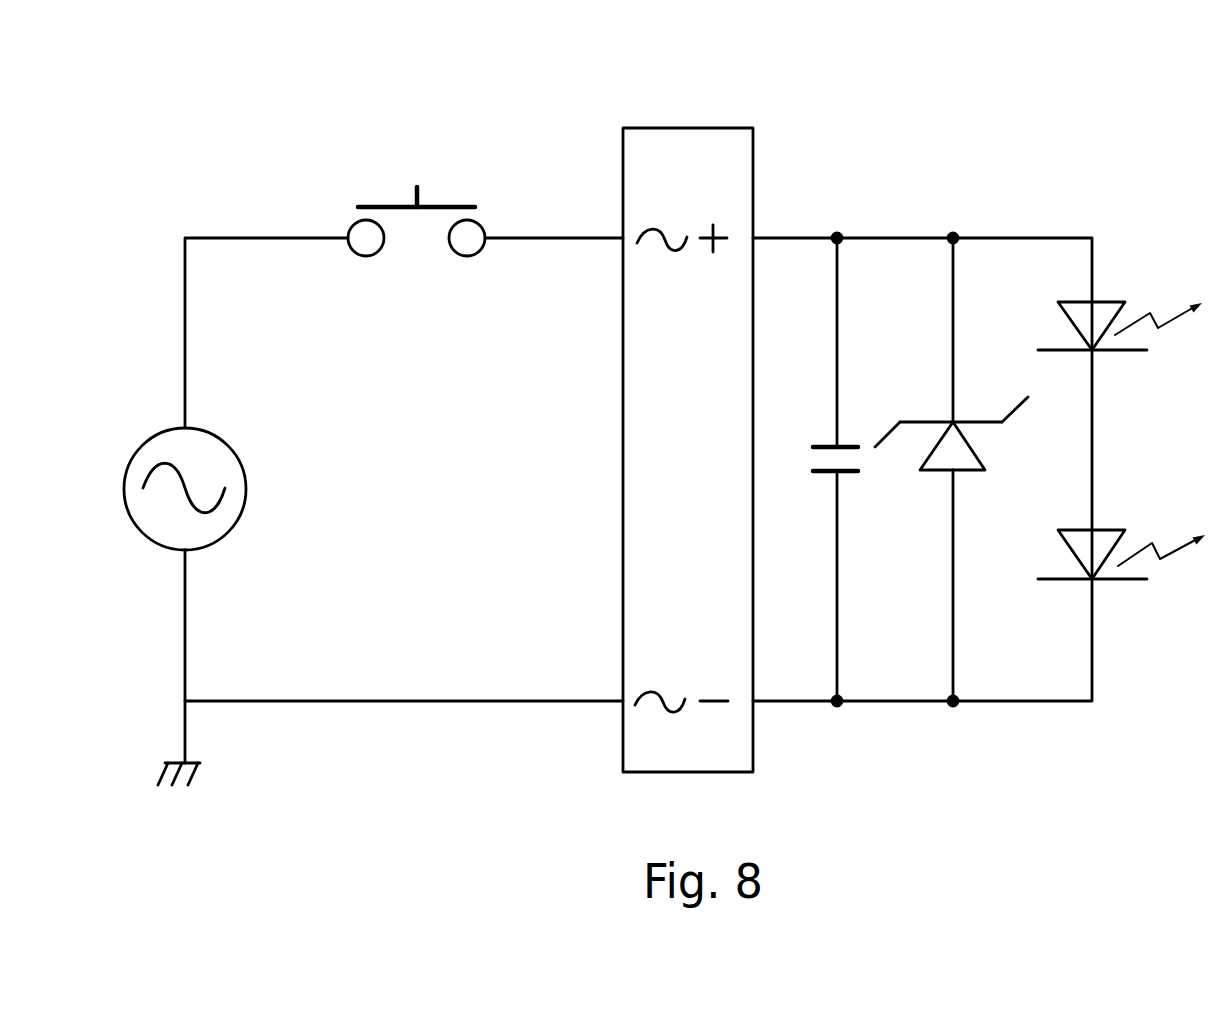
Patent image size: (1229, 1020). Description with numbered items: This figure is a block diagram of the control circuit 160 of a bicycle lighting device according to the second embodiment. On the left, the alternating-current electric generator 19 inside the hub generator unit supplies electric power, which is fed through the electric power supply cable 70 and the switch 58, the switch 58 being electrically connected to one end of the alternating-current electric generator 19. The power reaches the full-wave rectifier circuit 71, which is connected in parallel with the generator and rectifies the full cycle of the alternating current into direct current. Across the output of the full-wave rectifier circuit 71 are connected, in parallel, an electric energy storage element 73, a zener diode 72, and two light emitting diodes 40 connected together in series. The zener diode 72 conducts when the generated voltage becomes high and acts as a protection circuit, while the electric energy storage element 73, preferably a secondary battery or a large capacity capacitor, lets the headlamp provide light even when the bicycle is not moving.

The control circuit 160 is at (925, 140).
The electric power supply cable 70 is at (185, 369).
The alternating-current electric generator 19 is at (246, 482).
The switch 58 is at (440, 207).
The full-wave rectifier circuit 71 is at (720, 128).
The electric energy storage element 73 is at (843, 443).
The zener diode 72 is at (975, 420).
The light emitting diodes 40 is at (1108, 300).